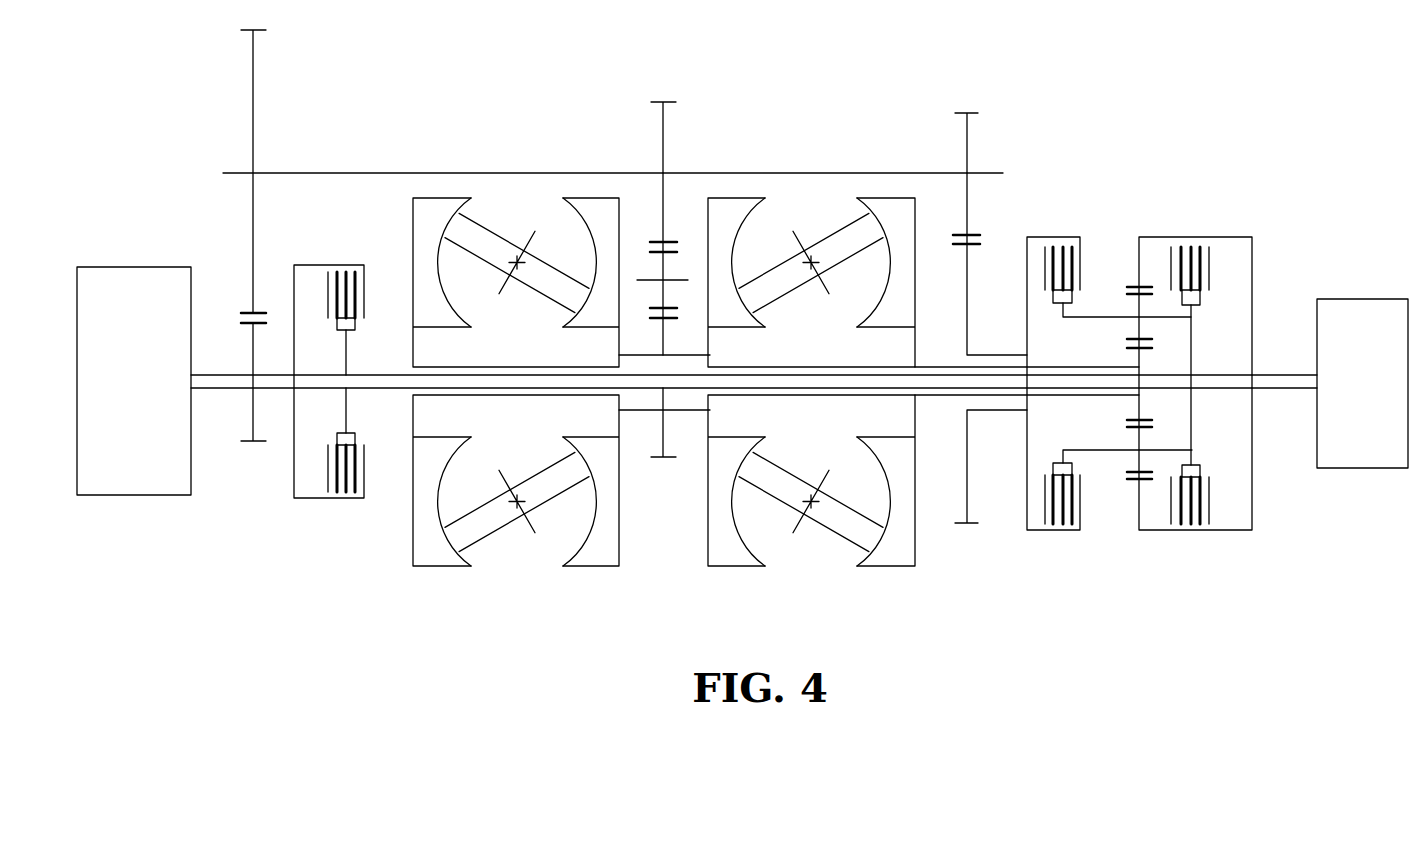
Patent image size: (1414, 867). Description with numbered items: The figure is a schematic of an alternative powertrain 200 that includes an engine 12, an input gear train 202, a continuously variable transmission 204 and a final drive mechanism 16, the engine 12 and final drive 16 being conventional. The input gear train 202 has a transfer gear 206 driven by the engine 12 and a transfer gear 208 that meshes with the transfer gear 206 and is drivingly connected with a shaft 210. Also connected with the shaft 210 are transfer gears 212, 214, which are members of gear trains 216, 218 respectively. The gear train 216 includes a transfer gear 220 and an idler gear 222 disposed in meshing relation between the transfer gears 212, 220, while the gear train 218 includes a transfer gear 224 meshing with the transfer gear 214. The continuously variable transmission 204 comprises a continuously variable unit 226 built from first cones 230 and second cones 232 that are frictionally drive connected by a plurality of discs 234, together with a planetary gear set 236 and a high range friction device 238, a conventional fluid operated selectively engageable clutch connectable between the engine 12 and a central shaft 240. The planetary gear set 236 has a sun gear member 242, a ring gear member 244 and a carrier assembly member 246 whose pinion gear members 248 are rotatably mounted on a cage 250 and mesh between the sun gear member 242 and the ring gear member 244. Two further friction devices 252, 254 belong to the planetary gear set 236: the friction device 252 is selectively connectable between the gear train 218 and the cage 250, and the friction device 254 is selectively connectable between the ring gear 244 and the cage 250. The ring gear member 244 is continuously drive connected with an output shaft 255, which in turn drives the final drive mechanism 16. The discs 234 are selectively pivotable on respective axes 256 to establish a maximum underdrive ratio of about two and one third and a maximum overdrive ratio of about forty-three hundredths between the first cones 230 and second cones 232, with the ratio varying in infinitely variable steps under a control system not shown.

The engine 12 is at (118, 263).
The final drive mechanism 16 is at (1360, 296).
The powertrain 200 is at (410, 146).
The input gear train 202 is at (264, 293).
The continuously variable transmission 204 is at (699, 167).
The transfer gear 206 is at (253, 415).
The transfer gear 208 is at (253, 250).
The shaft 210 is at (487, 172).
The transfer gear 212 is at (664, 142).
The transfer gear 214 is at (967, 143).
The gear train 216 is at (648, 237).
The gear train 218 is at (992, 227).
The transfer gear 220 is at (650, 439).
The idler gear 222 is at (664, 268).
The transfer gear 224 is at (967, 280).
The continuously variable unit 226 is at (693, 548).
The first cones 230 is at (596, 434).
The second cones 232 is at (469, 433).
The discs 234 is at (507, 242).
The planetary gear set 236 is at (1111, 236).
The high range friction device 238 is at (375, 478).
The central shaft 240 is at (390, 373).
The sun gear member 242 is at (1137, 357).
The ring gear member 244 is at (1138, 512).
The carrier assembly member 246 is at (1110, 465).
The pinion gear members 248 is at (1133, 310).
The cage 250 is at (1160, 317).
The friction device 252 is at (1070, 227).
The friction device 254 is at (1211, 224).
The output shaft 255 is at (1280, 393).
The axes 256 is at (514, 270).